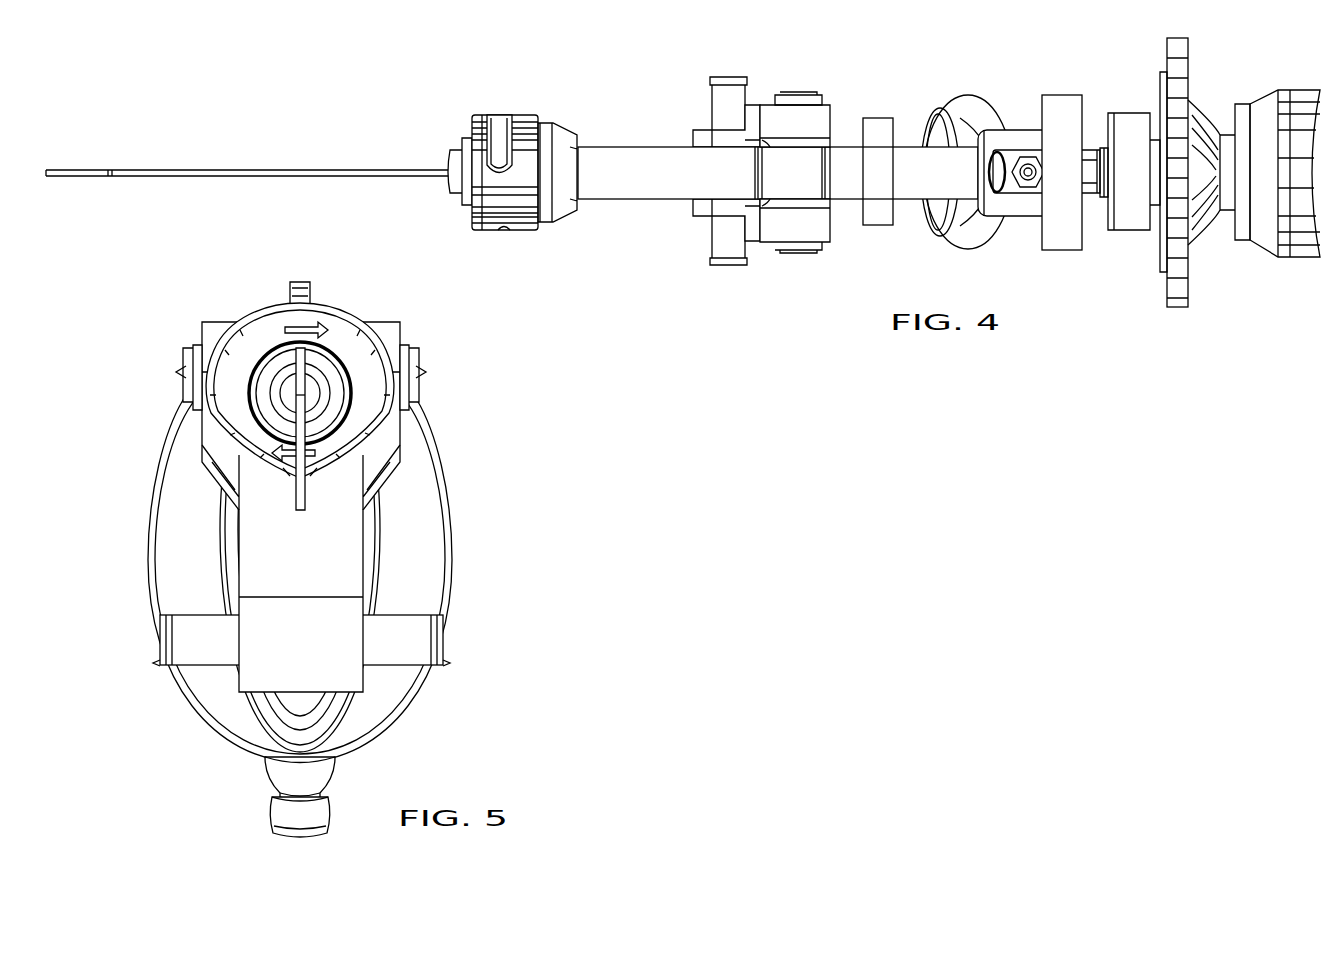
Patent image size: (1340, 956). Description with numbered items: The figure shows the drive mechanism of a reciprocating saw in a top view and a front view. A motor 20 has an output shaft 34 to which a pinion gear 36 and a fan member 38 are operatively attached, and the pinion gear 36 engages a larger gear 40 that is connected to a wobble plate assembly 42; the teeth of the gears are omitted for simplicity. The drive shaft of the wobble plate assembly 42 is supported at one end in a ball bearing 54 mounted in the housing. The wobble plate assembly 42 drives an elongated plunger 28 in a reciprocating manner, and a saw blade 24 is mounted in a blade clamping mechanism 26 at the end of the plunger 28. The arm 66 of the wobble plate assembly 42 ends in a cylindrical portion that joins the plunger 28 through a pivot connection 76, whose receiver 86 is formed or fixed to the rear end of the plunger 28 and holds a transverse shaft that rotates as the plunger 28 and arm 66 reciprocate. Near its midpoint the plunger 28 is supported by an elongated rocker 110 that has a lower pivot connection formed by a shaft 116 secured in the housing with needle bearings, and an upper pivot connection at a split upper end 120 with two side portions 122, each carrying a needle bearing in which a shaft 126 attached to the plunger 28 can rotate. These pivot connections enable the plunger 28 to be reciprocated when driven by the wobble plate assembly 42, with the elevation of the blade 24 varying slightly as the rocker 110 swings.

In FIG. 4, the motor 20 is at (1300, 236).
In FIG. 4, the saw blade 24 is at (253, 168).
In FIG. 5, the saw blade 24 is at (308, 492).
In FIG. 4, the blade clamping mechanism 26 is at (527, 120).
In FIG. 5, the blade clamping mechanism 26 is at (372, 378).
In FIG. 4, the plunger 28 is at (626, 203).
In FIG. 4, the output shaft 34 is at (1088, 183).
In FIG. 4, the pinion gear 36 is at (1084, 167).
In FIG. 4, the fan member 38 is at (1175, 290).
In FIG. 4, the gear 40 is at (1060, 232).
In FIG. 4, the wobble plate assembly 42 is at (986, 82).
In FIG. 4, the ball bearing 54 is at (880, 214).
In FIG. 4, the arm 66 is at (966, 128).
In FIG. 5, the arm 66 is at (398, 598).
In FIG. 4, the pivot connection 76 is at (1021, 220).
In FIG. 4, the receiver 86 is at (1024, 140).
In FIG. 4, the rocker 110 is at (758, 80).
In FIG. 4, the shaft 116 is at (727, 246).
In FIG. 5, the shaft 116 is at (408, 638).
In FIG. 4, the split upper end 120 is at (750, 123).
In FIG. 5, the split upper end 120 is at (240, 465).
In FIG. 4, the side portions 122 is at (813, 122).
In FIG. 5, the side portions 122 is at (212, 426).
In FIG. 5, the shaft 126 is at (183, 372).